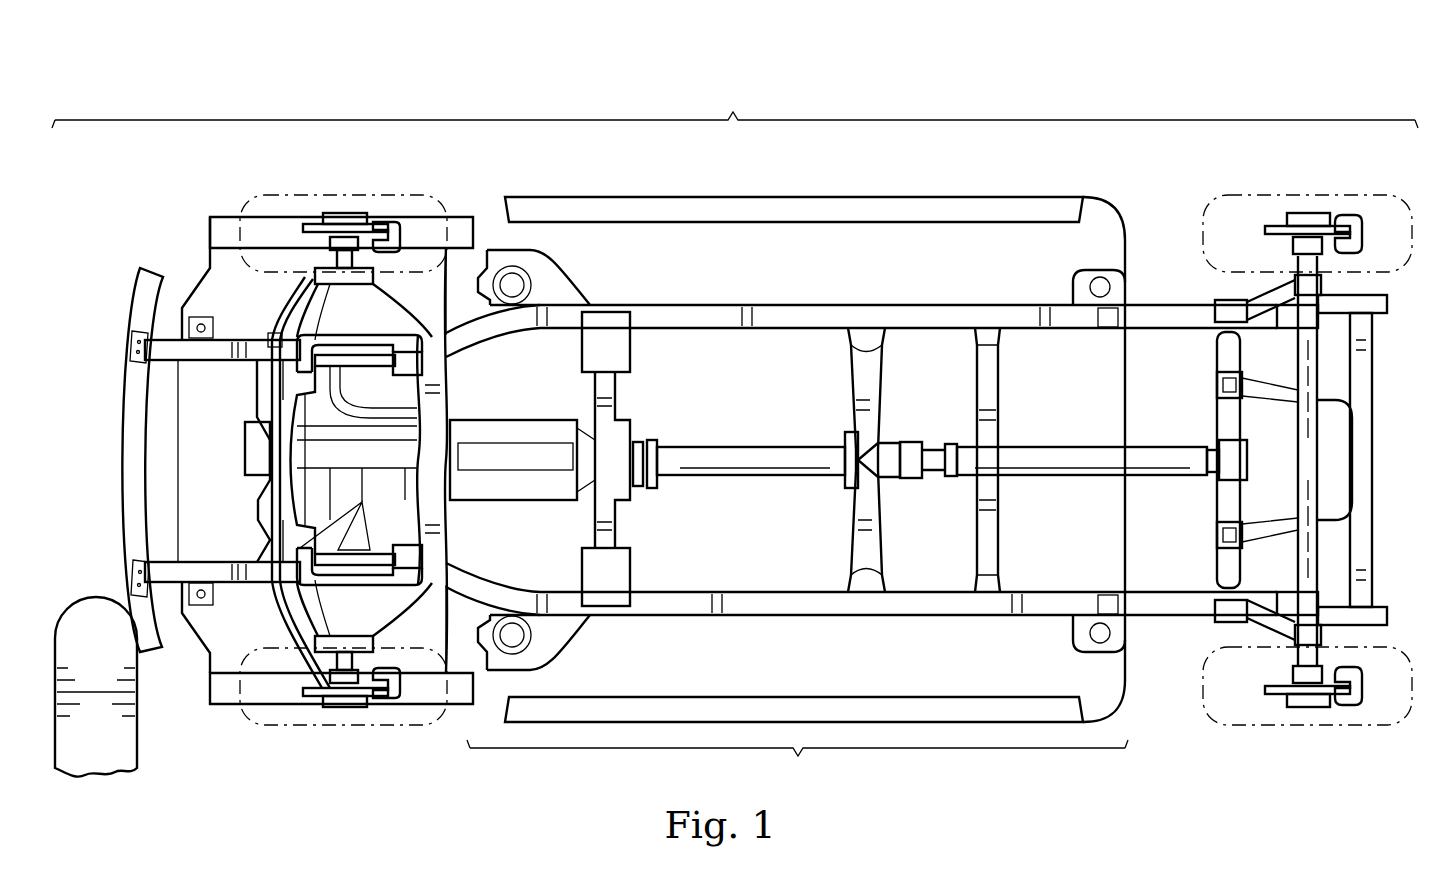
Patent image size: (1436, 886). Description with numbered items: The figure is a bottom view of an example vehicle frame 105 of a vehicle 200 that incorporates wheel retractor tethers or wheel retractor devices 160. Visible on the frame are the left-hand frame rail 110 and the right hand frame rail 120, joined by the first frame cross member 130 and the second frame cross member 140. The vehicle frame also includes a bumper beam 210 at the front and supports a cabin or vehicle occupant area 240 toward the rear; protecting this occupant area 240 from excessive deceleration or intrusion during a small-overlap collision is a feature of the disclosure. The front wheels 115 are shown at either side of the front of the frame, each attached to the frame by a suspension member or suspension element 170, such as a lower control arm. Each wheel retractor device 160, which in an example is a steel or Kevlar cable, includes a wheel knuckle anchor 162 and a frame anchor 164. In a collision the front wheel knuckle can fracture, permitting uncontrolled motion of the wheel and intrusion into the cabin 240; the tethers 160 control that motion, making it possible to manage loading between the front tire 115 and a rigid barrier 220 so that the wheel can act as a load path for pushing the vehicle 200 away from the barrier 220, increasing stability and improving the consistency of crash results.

The vehicle 200 is at (404, 78).
The vehicle frame 105 is at (735, 105).
The vehicle occupant area 240 is at (797, 765).
The front wheel 115 is at (348, 195).
The wheel knuckle anchor 162 is at (320, 225).
The suspension element 170 is at (362, 311).
The No. 2 frame cross member 140 is at (433, 378).
The wheel retractor device 160 is at (287, 288).
The frame anchor 164 is at (267, 337).
The right hand frame rail 120 is at (220, 350).
The left-hand frame rail 110 is at (157, 564).
The No. 1 frame cross member 130 is at (267, 535).
The bumper beam 210 is at (127, 310).
The rigid barrier 220 is at (126, 733).